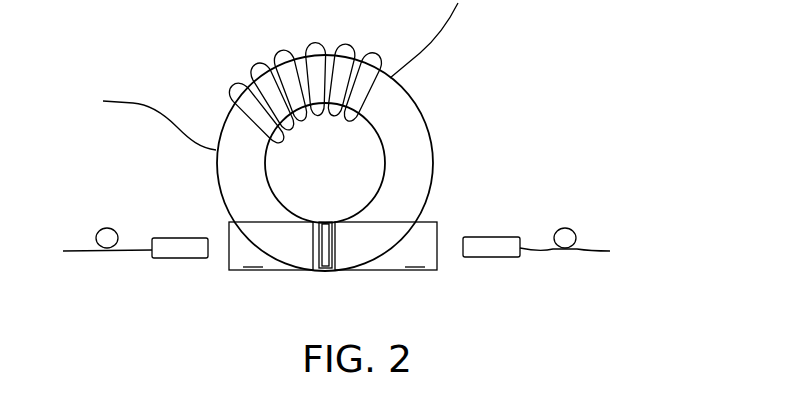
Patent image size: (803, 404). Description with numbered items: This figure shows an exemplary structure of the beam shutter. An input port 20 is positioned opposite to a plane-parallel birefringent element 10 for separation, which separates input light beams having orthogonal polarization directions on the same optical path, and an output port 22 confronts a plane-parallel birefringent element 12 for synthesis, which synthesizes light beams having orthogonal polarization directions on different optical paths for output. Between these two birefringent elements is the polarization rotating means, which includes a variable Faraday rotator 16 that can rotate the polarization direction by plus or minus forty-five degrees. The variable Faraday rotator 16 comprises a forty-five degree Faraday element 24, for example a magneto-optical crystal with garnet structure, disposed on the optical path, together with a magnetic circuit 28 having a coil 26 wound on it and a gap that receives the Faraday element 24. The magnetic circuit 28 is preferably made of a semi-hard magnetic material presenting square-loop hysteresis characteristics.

The plane-parallel birefringent element for separation 10 is at (270, 270).
The plane-parallel birefringent element for synthesis 12 is at (397, 265).
The ±45 degree variable Faraday rotator 16 is at (442, 110).
The input port 20 is at (172, 252).
The output port 22 is at (500, 250).
The 45 degree Faraday element 24 is at (325, 272).
The coil 26 is at (227, 100).
The magnetic circuit 28 is at (428, 162).